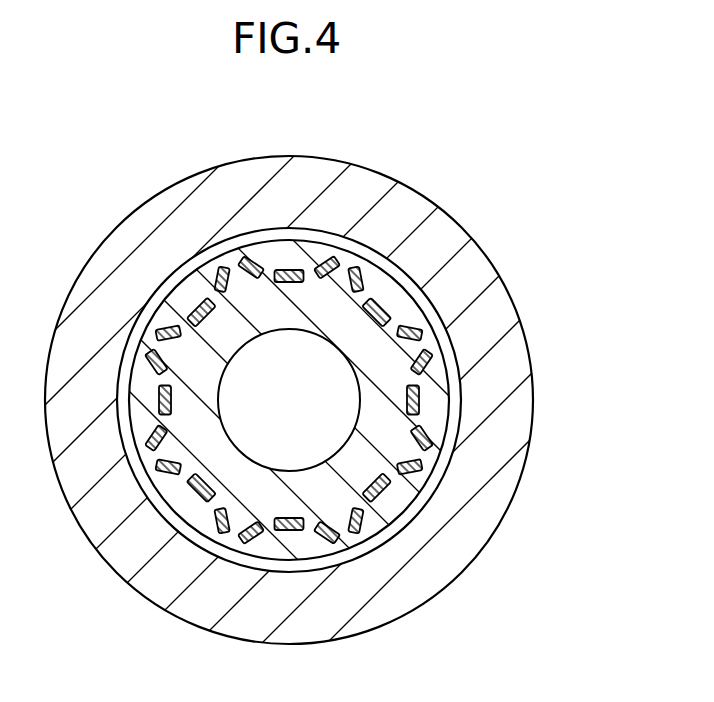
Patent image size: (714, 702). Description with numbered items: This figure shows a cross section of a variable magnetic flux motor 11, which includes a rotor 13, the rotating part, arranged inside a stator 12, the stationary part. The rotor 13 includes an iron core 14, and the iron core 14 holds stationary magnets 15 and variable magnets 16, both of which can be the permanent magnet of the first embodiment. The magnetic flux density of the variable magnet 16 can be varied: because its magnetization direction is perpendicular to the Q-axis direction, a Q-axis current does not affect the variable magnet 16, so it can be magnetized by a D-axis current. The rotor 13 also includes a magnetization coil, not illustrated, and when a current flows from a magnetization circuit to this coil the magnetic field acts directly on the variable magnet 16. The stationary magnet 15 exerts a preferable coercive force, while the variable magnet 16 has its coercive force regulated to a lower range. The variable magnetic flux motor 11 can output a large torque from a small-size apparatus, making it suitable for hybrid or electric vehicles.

The variable magnetic flux motor 11 is at (478, 156).
The stator 12 is at (518, 480).
The rotor 13 is at (508, 214).
The iron core 14 is at (400, 318).
The stationary magnet 15 is at (420, 352).
The variable magnet 16 is at (447, 390).